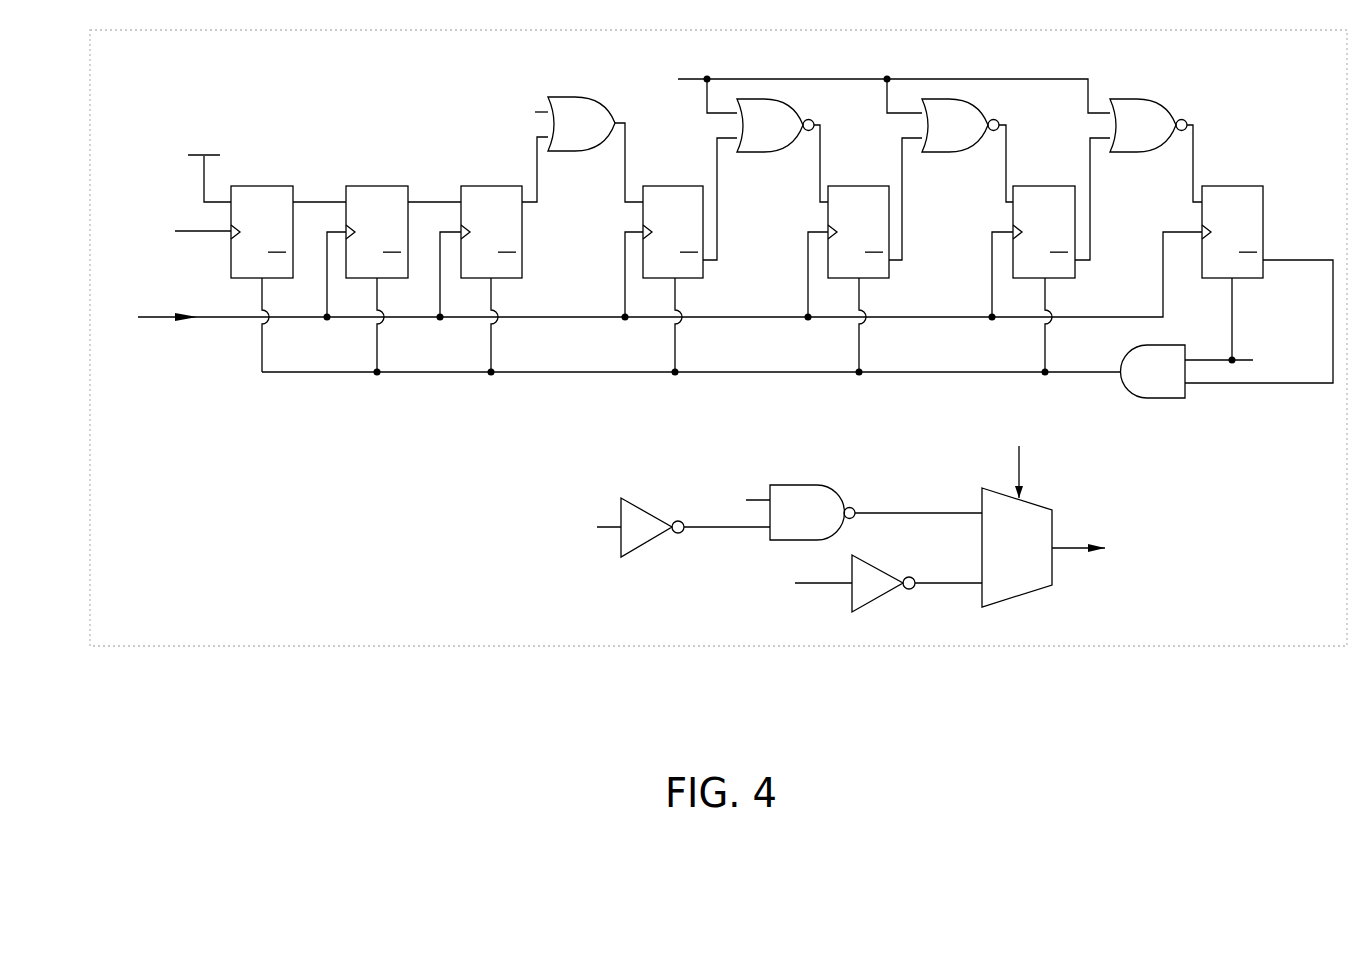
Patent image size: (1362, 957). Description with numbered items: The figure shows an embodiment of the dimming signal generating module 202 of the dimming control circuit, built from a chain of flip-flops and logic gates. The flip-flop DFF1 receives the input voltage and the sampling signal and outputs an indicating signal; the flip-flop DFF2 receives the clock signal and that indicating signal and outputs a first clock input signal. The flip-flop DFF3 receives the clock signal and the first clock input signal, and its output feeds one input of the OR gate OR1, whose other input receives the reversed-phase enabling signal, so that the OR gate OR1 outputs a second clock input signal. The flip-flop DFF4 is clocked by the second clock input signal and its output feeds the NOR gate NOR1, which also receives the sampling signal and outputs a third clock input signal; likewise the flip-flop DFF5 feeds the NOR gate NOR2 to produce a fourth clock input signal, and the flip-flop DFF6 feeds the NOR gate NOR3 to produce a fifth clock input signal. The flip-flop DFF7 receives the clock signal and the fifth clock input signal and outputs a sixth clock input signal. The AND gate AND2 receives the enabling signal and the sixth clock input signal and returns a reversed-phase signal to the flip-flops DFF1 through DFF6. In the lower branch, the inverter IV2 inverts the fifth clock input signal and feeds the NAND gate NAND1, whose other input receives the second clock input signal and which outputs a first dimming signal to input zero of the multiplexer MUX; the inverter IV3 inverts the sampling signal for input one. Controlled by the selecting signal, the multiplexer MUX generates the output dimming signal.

The dimming signal generating module 202 is at (718, 338).
The flip-flop DFF1 is at (262, 233).
The flip-flop DFF2 is at (377, 233).
The flip-flop DFF3 is at (491, 233).
The flip-flop DFF4 is at (673, 233).
The flip-flop DFF5 is at (858, 233).
The flip-flop DFF6 is at (1044, 233).
The flip-flop DFF7 is at (1232, 233).
The OR gate OR1 is at (581, 124).
The NOR gate NOR1 is at (775, 125).
The NOR gate NOR2 is at (960, 125).
The NOR gate NOR3 is at (1148, 125).
The NAND gate NAND1 is at (812, 512).
The AND gate AND2 is at (1153, 371).
The inverter IV2 is at (633, 503).
The inverter IV3 is at (864, 560).
The multiplexer MUX is at (1017, 547).